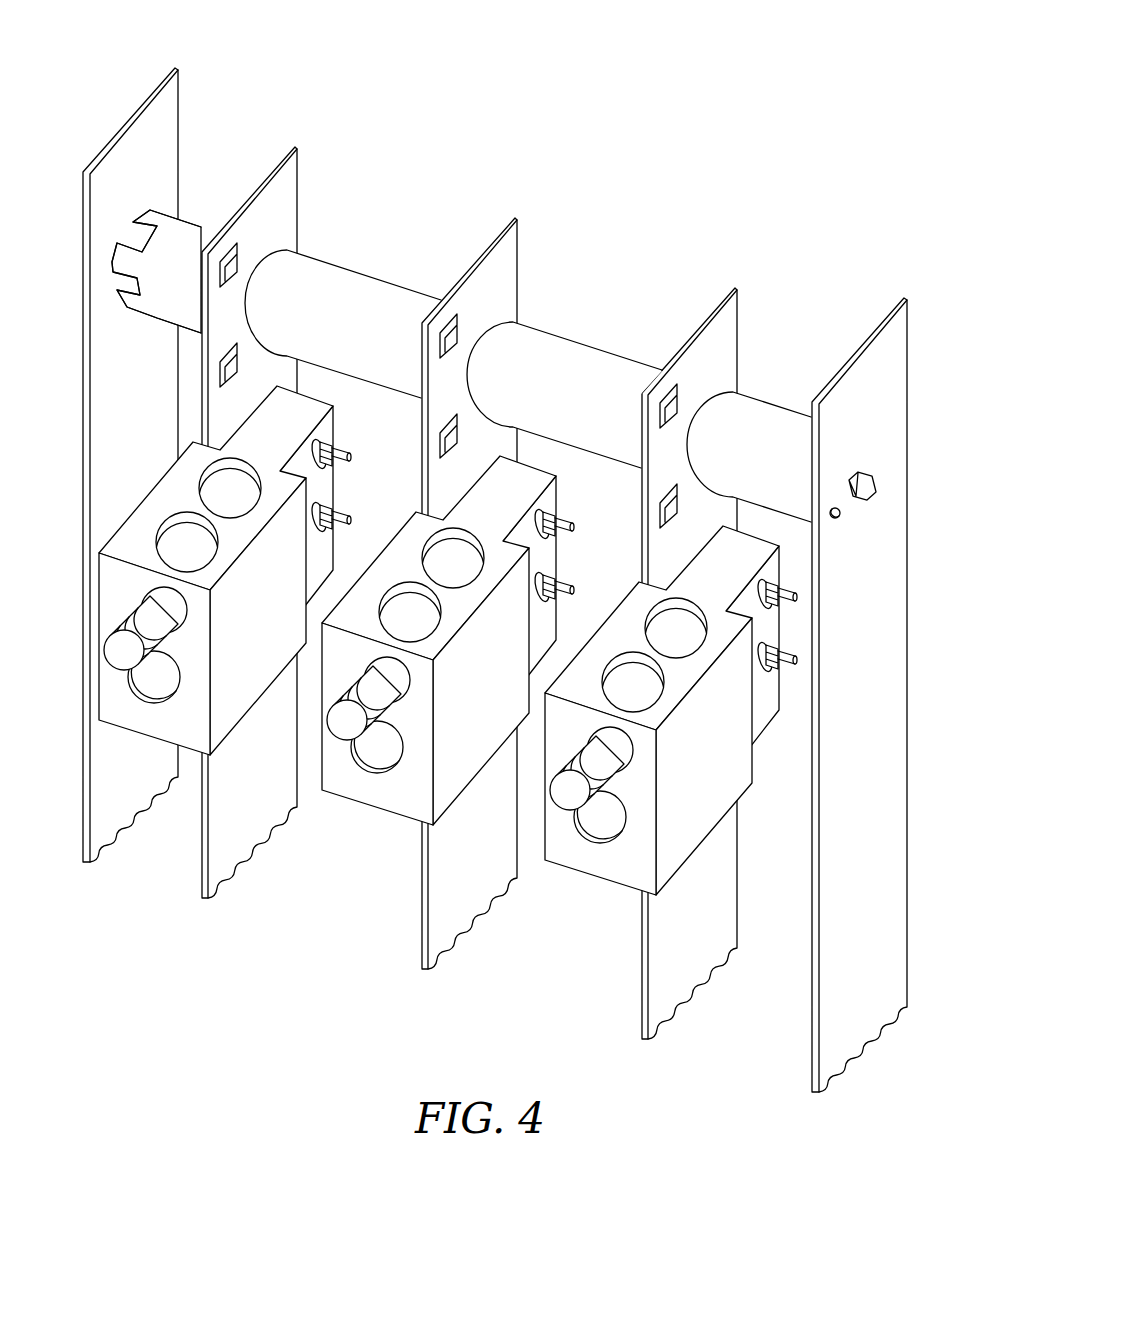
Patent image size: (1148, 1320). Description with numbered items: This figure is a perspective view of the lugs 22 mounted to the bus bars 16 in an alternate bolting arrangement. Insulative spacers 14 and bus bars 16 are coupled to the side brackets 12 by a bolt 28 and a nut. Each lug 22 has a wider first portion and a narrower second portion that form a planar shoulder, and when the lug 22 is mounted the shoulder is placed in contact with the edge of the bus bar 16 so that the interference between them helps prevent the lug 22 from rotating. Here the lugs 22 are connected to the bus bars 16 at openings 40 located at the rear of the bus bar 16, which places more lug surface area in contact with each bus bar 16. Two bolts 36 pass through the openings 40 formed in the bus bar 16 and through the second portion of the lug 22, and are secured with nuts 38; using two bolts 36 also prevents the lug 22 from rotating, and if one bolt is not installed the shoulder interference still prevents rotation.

The side bracket 12 is at (175, 68).
The insulative spacer 14 is at (308, 263).
The bus bar 16 is at (292, 147).
The lug 22 is at (590, 866).
The bolt 28 is at (867, 475).
The bolt 36 is at (570, 528).
The nut 38 is at (533, 513).
The opening 40 is at (446, 332).